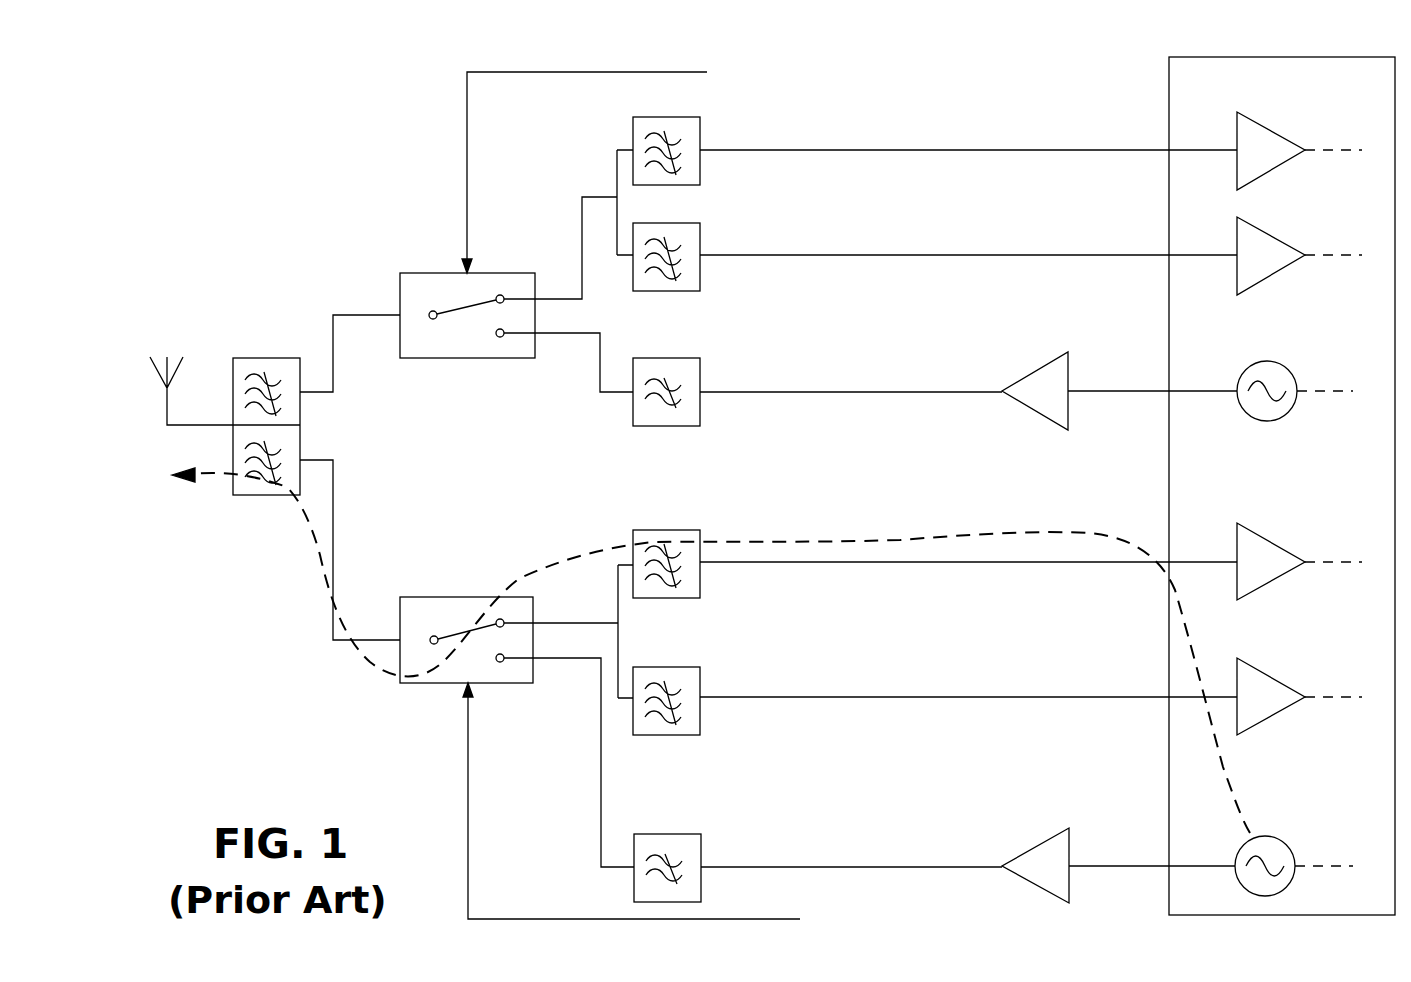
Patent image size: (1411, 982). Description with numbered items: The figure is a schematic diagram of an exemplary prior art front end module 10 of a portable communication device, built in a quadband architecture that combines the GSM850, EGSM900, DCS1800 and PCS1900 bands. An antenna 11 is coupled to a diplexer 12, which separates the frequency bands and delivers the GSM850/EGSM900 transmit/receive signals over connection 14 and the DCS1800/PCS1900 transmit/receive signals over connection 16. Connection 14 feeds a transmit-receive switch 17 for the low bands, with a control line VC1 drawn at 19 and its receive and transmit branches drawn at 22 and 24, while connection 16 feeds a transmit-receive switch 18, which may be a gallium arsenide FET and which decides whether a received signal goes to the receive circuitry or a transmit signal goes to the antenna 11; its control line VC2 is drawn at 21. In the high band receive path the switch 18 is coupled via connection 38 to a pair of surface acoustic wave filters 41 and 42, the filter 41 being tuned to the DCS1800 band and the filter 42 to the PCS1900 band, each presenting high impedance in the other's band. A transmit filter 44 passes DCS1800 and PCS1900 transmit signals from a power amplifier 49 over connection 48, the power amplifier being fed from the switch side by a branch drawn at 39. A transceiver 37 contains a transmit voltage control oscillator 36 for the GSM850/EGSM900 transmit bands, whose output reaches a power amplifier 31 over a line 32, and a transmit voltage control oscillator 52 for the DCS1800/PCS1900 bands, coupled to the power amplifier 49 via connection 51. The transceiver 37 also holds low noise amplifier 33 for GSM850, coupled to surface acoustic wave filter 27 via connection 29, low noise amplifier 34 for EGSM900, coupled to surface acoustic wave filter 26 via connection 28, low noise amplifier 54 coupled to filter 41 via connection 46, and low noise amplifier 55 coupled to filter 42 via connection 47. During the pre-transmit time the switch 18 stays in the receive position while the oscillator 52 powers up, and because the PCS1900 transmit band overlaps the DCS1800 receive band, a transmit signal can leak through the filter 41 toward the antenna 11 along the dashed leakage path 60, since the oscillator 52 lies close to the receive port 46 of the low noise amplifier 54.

The front end module 10 is at (240, 191).
The antenna 11 is at (165, 402).
The diplexer 12 is at (240, 357).
The connection 14 is at (333, 352).
The connection 16 is at (333, 473).
The transmit-receive switch 17 is at (434, 297).
The transmit-receive switch 18 is at (434, 621).
The control line VC1 19 is at (560, 72).
The control line VC2 21 is at (728, 919).
The receive path from switch 17 22 is at (557, 299).
The transmit path to switch 17 24 is at (572, 333).
The surface acoustic wave filter 26 is at (651, 223).
The surface acoustic wave filter 27 is at (672, 117).
The connection 28 is at (780, 255).
The connection 29 is at (858, 150).
The low band power amplifier 31 is at (1035, 402).
The low band transmit line 32 is at (1102, 391).
The low noise amplifier 33 is at (1245, 162).
The low noise amplifier 34 is at (1245, 266).
The transmit voltage control oscillator 36 is at (1267, 361).
The transceiver 37 is at (1208, 87).
The connection 38 is at (572, 623).
The high band transmit path 39 is at (601, 748).
The surface acoustic wave filter 41 is at (660, 530).
The surface acoustic wave filter 42 is at (660, 667).
The transmit filter 44 is at (657, 834).
The connection 46 is at (792, 562).
The connection 47 is at (730, 697).
The connection 48 is at (893, 867).
The power amplifier 49 is at (1035, 877).
The connection 51 is at (1102, 866).
The transmit voltage control oscillator 52 is at (1265, 836).
The low noise amplifier 54 is at (1245, 573).
The low noise amplifier 55 is at (1245, 708).
The leakage path 60 is at (985, 533).